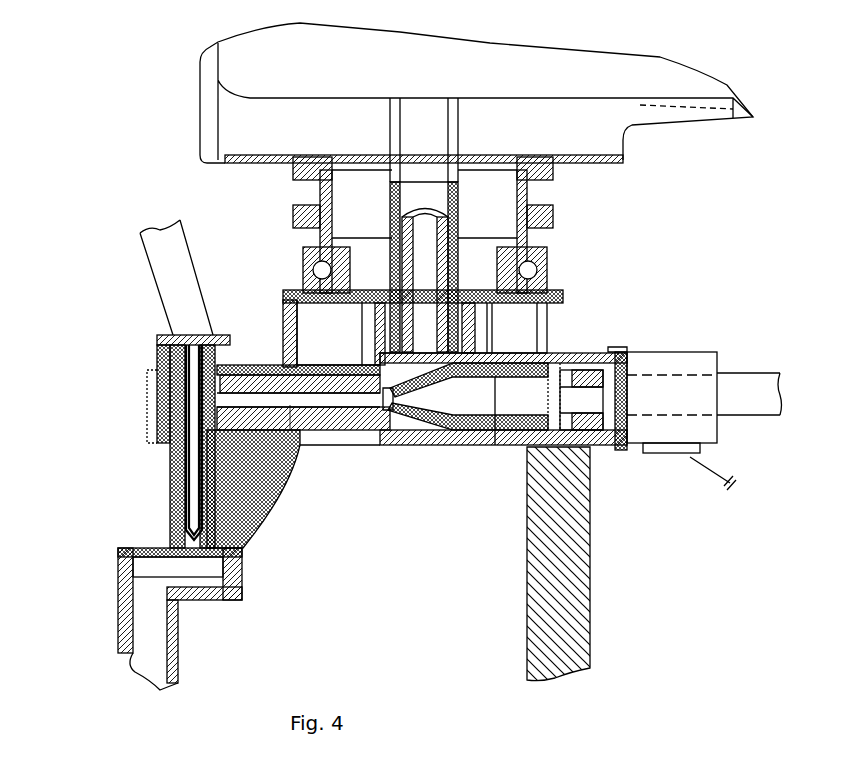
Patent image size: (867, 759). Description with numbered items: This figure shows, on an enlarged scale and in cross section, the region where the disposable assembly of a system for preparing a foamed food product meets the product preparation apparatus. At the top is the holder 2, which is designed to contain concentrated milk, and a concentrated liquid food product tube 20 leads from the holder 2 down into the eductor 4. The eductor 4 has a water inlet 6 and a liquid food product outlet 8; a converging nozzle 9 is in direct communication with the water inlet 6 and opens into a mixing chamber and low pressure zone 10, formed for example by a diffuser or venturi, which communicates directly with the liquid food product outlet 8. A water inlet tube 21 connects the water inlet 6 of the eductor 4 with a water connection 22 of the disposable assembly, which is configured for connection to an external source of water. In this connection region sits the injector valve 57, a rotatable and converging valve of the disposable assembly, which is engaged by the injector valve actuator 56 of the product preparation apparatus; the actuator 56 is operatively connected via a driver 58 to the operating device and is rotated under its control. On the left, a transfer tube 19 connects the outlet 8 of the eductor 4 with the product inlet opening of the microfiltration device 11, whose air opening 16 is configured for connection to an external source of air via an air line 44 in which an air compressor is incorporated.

The holder 2 is at (513, 98).
The concentrated liquid food product tube 20 is at (458, 188).
The air line 44 is at (150, 257).
The air opening 16 is at (205, 342).
The microfiltration device 11 is at (160, 373).
The water inlet tube 21 is at (533, 345).
The water inlet 6 is at (598, 393).
The injector valve actuator 56 is at (665, 365).
The transfer tube 19 is at (332, 423).
The mixing chamber and low pressure zone 10 is at (305, 395).
The liquid food product outlet 8 is at (383, 395).
The converging nozzle 9 is at (417, 420).
The injector valve 57 is at (505, 448).
The water connection 22 is at (548, 397).
The driver 58 is at (663, 457).
The eductor 4 is at (447, 445).